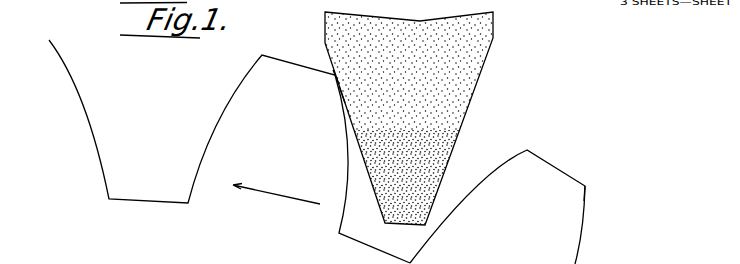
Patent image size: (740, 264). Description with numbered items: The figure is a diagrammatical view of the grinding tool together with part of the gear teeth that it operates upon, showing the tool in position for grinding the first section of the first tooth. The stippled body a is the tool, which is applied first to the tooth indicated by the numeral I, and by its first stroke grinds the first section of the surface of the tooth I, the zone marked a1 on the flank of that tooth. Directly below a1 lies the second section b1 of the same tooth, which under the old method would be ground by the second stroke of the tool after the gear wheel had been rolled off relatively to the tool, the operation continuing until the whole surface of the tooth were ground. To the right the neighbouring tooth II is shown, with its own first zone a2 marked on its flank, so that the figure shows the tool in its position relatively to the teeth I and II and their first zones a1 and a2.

The first tooth I is at (299, 160).
The second tooth II is at (526, 231).
The gear tooth a is at (409, 118).
The first section of the tooth surface a1 is at (339, 67).
The second section of the tooth surface b1 is at (341, 86).
The first section of the second tooth a2 is at (582, 184).